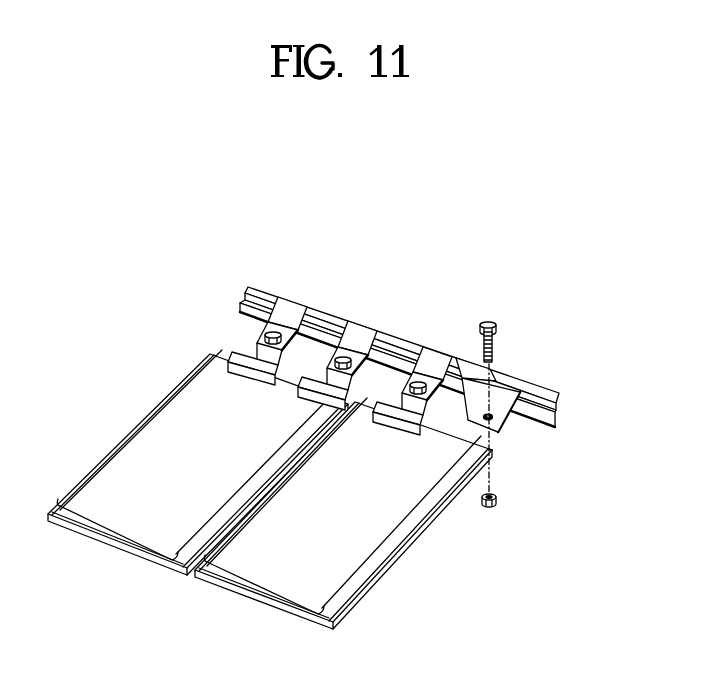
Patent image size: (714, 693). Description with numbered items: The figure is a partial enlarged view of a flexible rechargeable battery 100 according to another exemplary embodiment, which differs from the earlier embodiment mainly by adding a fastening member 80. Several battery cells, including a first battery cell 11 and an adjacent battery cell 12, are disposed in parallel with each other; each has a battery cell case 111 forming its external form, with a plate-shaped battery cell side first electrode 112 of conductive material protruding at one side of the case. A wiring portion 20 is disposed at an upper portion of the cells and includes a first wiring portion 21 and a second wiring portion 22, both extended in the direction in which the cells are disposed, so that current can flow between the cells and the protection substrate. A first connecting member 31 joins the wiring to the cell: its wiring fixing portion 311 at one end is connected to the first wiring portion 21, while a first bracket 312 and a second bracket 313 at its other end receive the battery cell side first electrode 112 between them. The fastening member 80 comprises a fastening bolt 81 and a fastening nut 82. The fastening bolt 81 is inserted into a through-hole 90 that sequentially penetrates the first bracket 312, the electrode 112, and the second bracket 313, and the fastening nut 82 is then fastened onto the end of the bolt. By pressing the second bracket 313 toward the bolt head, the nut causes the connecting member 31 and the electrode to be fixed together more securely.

The flexible rechargeable battery 100 is at (366, 290).
The wiring portion 20 is at (399, 329).
The first wiring portion 21 is at (398, 343).
The second wiring portion 22 is at (470, 390).
The first battery cell 11 is at (377, 523).
The battery cell 12 is at (152, 526).
The battery cell case 111 is at (494, 453).
The battery cell side first electrode 112 is at (500, 433).
The first connecting member 31 is at (509, 405).
The wiring fixing portion 311 is at (520, 385).
The first bracket 312 is at (469, 405).
The second bracket 313 is at (530, 424).
The through-hole 90 is at (491, 412).
The fastening member 80 is at (510, 396).
The fastening bolt 81 is at (498, 328).
The fastening nut 82 is at (490, 519).